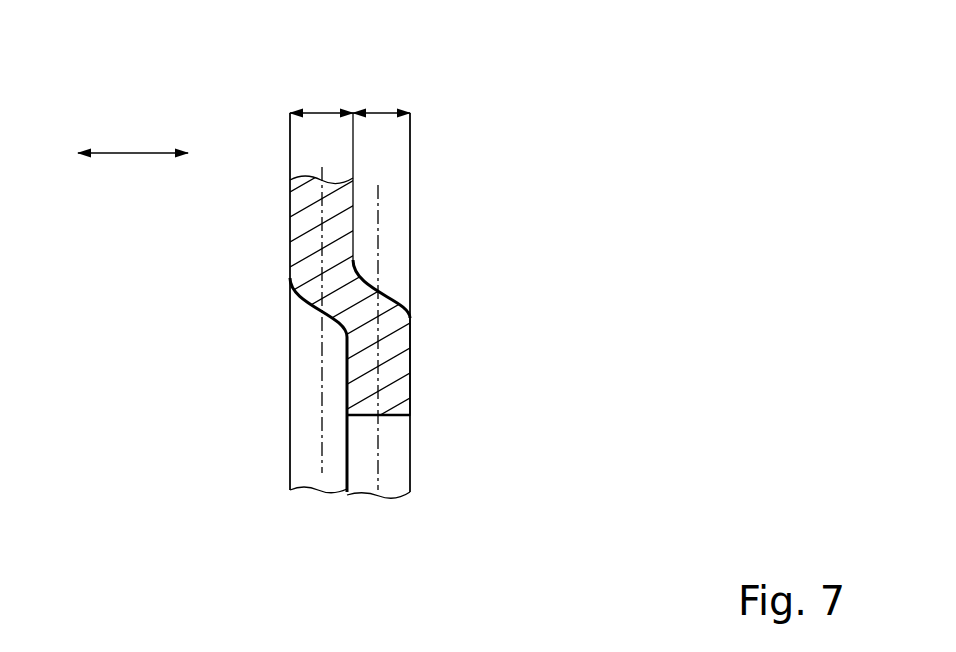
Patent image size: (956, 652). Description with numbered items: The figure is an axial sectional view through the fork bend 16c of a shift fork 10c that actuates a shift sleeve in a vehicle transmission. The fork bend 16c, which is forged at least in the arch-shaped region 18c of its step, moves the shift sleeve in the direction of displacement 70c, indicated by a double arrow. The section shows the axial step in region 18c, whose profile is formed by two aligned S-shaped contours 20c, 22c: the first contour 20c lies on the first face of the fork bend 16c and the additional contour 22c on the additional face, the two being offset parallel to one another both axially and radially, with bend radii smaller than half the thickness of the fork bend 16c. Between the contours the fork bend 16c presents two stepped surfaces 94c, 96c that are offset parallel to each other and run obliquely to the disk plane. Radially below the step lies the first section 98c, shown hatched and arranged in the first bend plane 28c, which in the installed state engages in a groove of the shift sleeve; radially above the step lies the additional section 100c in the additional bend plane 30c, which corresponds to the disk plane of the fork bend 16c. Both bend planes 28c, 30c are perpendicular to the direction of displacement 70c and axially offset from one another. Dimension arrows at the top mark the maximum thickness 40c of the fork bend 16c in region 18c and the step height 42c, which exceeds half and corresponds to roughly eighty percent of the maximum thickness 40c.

The shift fork 10c is at (460, 210).
The fork bend 16c is at (453, 248).
The region of the step 18c is at (462, 268).
The first S-shaped contour 20c is at (422, 217).
The additional S-shaped contour 22c is at (310, 333).
The first bend plane 28c is at (398, 476).
The additional bend plane 30c is at (318, 456).
The maximum thickness 40c is at (322, 113).
The step height 42c is at (380, 113).
The direction of displacement 70c is at (133, 152).
The stepped surface 94c is at (318, 300).
The stepped surface 96c is at (393, 295).
The first section 98c is at (398, 352).
The additional section 100c is at (305, 228).